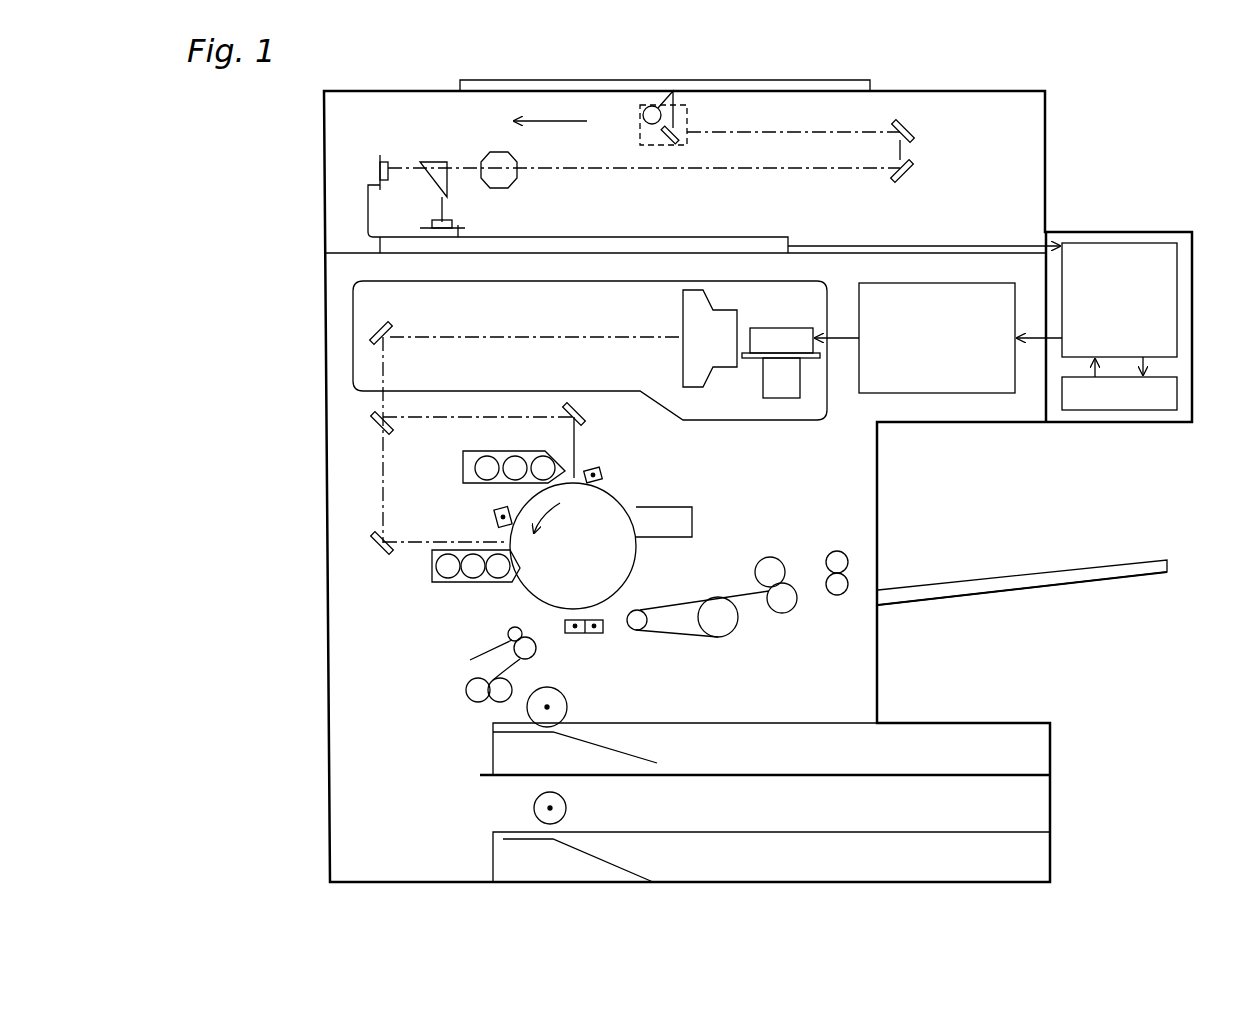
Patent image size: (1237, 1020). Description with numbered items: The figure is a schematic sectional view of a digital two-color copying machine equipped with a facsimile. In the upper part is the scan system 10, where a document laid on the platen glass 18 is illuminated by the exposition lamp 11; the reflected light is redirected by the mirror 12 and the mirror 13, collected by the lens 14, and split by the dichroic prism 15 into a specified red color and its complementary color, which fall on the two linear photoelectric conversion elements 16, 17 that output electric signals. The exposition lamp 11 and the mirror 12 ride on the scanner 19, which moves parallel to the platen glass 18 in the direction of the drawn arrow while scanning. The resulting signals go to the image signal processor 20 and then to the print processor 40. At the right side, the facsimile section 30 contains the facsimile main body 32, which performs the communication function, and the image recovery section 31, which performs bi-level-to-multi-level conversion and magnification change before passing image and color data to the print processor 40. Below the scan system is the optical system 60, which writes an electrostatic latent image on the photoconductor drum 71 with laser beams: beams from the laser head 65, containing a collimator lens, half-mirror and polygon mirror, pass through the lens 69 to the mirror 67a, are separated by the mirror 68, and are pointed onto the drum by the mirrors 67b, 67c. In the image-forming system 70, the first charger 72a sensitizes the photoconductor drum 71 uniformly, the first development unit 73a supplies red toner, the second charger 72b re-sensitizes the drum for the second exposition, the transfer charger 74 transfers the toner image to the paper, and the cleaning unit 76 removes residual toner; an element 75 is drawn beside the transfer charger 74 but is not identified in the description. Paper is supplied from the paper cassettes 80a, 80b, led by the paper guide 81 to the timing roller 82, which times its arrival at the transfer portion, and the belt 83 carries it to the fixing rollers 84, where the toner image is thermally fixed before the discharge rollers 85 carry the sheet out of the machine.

The scan system 10 is at (985, 132).
The exposition lamp 11 is at (646, 114).
The mirror 12 is at (668, 144).
The mirror 13 is at (920, 136).
The lens 14 is at (517, 172).
The dichroic prism 15 is at (436, 163).
The photoelectric conversion element 16 is at (378, 166).
The photoelectric conversion element 17 is at (453, 224).
The platen glass 18 is at (743, 79).
The scanner 19 is at (688, 113).
The image signal processor 20 is at (725, 237).
The facsimile section 30 is at (1130, 193).
The image recovery section 31 is at (1097, 243).
The facsimile main body 32 is at (1100, 410).
The print processor 40 is at (965, 393).
The optical system 60 is at (445, 318).
The laser head 65 is at (763, 385).
The mirror 67a is at (372, 330).
The mirror 67b is at (378, 552).
The mirror 67c is at (583, 413).
The mirror 68 is at (377, 427).
The lens 69 is at (683, 310).
The image-forming system 70 is at (782, 455).
The photoconductor drum 71 is at (636, 555).
The first charger 72a is at (598, 468).
The second charger 72b is at (495, 512).
The first development unit 73a is at (463, 465).
The transfer charger 74 is at (577, 634).
The discharger 75 is at (598, 634).
The cleaning unit 76 is at (692, 507).
The paper cassette 80a is at (1007, 722).
The paper cassette 80b is at (1010, 832).
The paper guide 81 is at (477, 700).
The timing roller 82 is at (512, 633).
The belt 83 is at (685, 637).
The fixing rollers 84 is at (772, 556).
The discharge rollers 85 is at (837, 551).